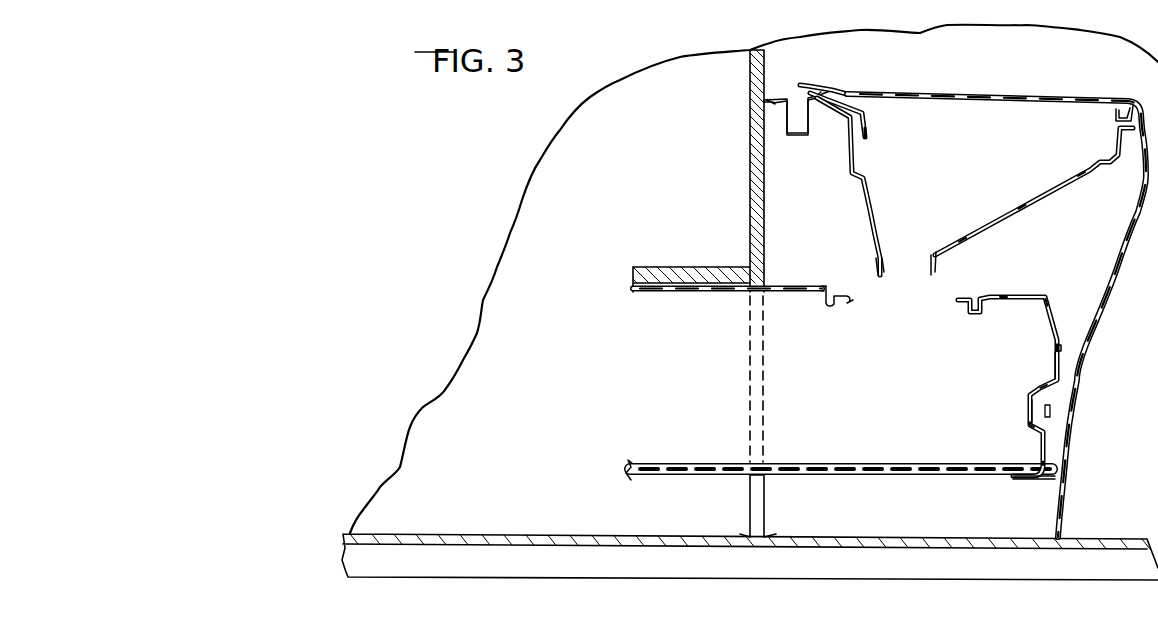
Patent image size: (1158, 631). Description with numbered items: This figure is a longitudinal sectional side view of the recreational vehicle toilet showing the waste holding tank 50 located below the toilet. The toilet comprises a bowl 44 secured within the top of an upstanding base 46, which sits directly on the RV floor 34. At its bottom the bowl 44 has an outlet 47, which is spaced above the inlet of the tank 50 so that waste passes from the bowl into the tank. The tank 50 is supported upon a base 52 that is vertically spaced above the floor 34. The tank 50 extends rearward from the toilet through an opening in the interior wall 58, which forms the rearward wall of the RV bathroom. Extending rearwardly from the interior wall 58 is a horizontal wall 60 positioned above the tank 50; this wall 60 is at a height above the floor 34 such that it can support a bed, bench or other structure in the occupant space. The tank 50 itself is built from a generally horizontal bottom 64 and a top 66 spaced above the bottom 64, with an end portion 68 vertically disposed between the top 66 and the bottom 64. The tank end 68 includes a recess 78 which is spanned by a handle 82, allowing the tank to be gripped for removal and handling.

The floor 34 is at (1088, 537).
The bowl 44 is at (1066, 188).
The upstanding base 46 is at (1108, 287).
The outlet 47 is at (933, 256).
The waste holding tank 50 is at (1052, 318).
The base 52 is at (1052, 480).
The interior wall 58 is at (742, 160).
The horizontal wall 60 is at (708, 266).
The bottom 64 is at (851, 462).
The top 66 is at (786, 296).
The end portion 68 is at (1052, 365).
The recess 78 is at (1027, 413).
The handle 82 is at (1052, 410).